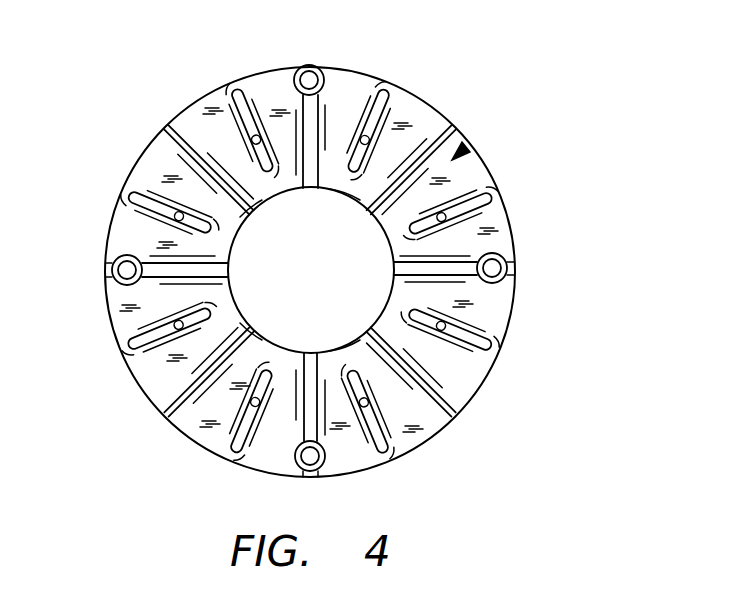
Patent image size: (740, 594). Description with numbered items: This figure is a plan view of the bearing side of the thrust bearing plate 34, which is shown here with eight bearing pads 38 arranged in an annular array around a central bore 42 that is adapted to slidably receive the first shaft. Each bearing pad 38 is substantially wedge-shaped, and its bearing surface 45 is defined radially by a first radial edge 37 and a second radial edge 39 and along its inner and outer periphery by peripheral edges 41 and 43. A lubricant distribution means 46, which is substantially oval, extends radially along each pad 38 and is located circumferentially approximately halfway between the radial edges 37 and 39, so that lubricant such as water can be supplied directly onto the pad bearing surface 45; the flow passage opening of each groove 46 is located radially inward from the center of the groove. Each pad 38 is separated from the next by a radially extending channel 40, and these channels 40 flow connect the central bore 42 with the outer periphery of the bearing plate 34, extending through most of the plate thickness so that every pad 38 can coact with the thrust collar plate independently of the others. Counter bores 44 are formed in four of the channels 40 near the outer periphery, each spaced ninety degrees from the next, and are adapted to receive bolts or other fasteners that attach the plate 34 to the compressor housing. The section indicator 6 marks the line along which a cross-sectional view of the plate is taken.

The thrust bearing plate 34 is at (540, 405).
The first radial edge 37 is at (188, 160).
The bearing pad 38 is at (148, 377).
The second radial edge 39 is at (207, 138).
The radially extending channel 40 is at (252, 212).
The inner peripheral edge 41 is at (342, 194).
The central bore 42 is at (329, 284).
The outer peripheral edge 43 is at (207, 82).
The counter bore 44 is at (297, 71).
The bearing surface 45 is at (466, 150).
The lubricant distribution means 46 is at (379, 98).
The section line 6- 6 is at (294, 230).